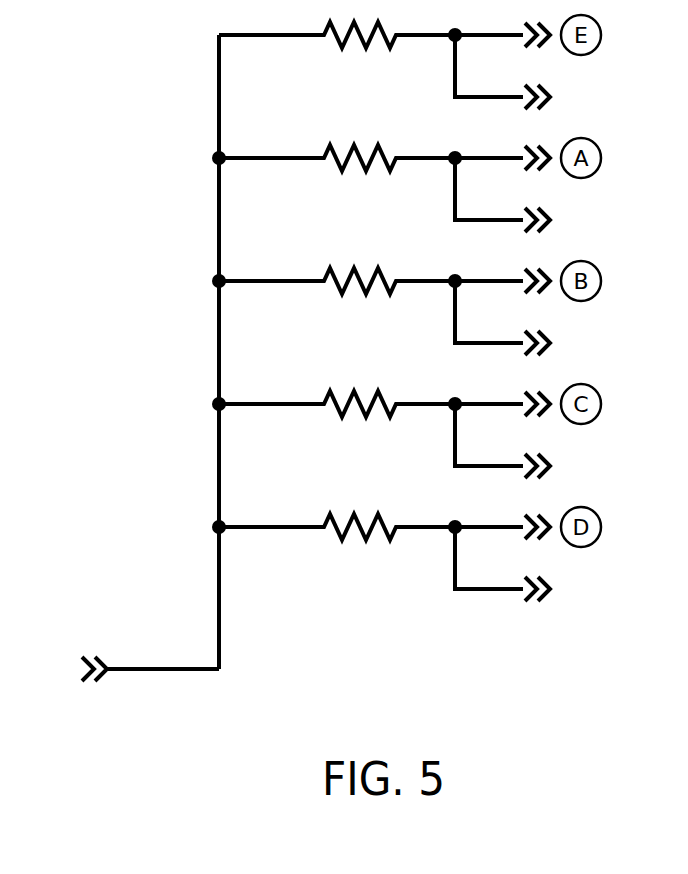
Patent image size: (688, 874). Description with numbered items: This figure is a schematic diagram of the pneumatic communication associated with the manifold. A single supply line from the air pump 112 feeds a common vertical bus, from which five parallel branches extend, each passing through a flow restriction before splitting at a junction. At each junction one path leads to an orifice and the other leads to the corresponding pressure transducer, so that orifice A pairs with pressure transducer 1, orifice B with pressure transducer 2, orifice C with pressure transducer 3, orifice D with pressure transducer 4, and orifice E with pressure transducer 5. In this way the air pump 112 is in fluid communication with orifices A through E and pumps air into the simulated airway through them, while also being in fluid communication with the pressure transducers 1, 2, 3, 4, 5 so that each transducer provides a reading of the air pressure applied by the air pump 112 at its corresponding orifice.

The air pump 112 is at (128, 672).
The pressure transducer 1 is at (528, 199).
The pressure transducer 2 is at (528, 322).
The pressure transducer 3 is at (528, 445).
The pressure transducer 4 is at (528, 568).
The pressure transducer 5 is at (528, 76).